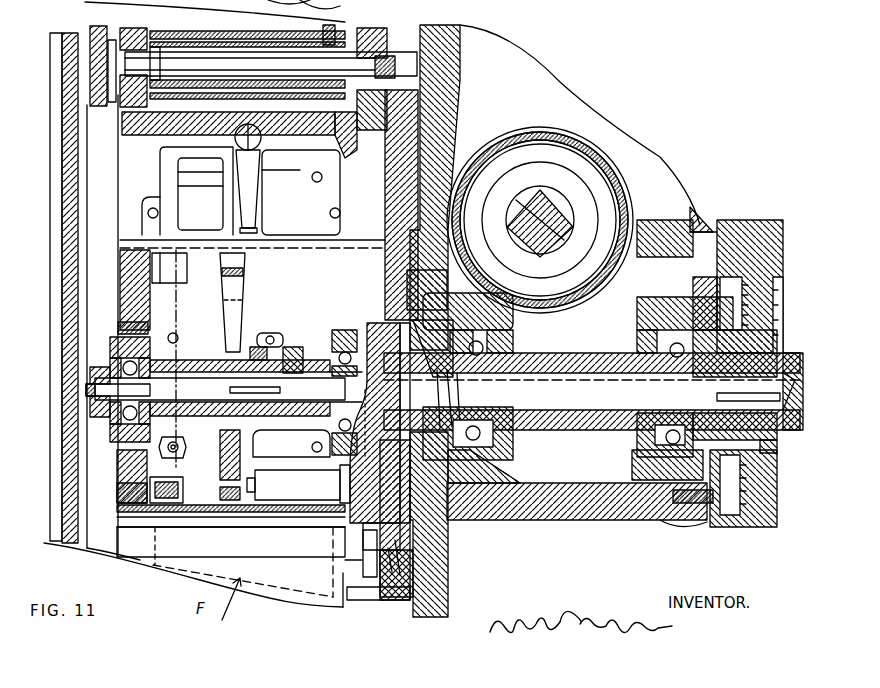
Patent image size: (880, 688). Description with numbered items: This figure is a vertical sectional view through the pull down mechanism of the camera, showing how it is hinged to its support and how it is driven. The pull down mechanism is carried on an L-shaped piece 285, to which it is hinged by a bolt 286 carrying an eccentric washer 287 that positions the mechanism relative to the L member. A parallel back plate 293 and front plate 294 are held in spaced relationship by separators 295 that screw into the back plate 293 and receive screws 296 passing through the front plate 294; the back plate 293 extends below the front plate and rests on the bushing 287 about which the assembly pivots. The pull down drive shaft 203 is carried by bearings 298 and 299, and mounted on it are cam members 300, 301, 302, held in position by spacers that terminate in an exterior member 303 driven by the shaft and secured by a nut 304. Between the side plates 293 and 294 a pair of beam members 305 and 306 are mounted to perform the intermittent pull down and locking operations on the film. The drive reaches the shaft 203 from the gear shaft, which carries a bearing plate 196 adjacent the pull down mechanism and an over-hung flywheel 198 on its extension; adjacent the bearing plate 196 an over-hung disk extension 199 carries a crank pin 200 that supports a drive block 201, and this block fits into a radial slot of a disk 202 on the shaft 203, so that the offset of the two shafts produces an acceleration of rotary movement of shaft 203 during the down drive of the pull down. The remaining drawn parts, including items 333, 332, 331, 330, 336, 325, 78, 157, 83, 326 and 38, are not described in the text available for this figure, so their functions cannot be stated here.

The end plate 333 is at (65, 48).
The block 332 is at (130, 128).
The hydraulic cylinder 331 is at (345, 30).
The bracket plate 330 is at (130, 154).
The lever 336 is at (251, 190).
The cover plate 325 is at (246, 250).
The front plate 294 is at (126, 259).
The beam member 306 is at (235, 345).
The exterior member 303 is at (118, 328).
The nut 304 is at (124, 362).
The cam member 301 is at (211, 364).
The pull down drive shaft 203 is at (86, 390).
The cam member 300 is at (220, 389).
The cam member 302 is at (256, 388).
The beam member 305 is at (282, 334).
The separators 295 is at (262, 274).
The bearing 299 is at (348, 505).
The back plate 293 is at (396, 122).
The L-shaped piece 285 is at (440, 102).
The housing 78 is at (652, 168).
The crank pin 200 is at (480, 284).
The bearing plate 196 is at (562, 291).
The drive block 201 is at (470, 246).
The hub 157 is at (534, 258).
The square shaft 83 is at (556, 212).
The disk extension 199 is at (415, 398).
The disk 202 is at (455, 532).
The eccentric washer 287 is at (410, 560).
The flywheel 198 is at (762, 224).
The bearing 298 is at (130, 448).
The spacer 326 is at (226, 514).
The screws 296 is at (122, 495).
The frame 38 is at (243, 562).
The bolt 286 is at (345, 608).